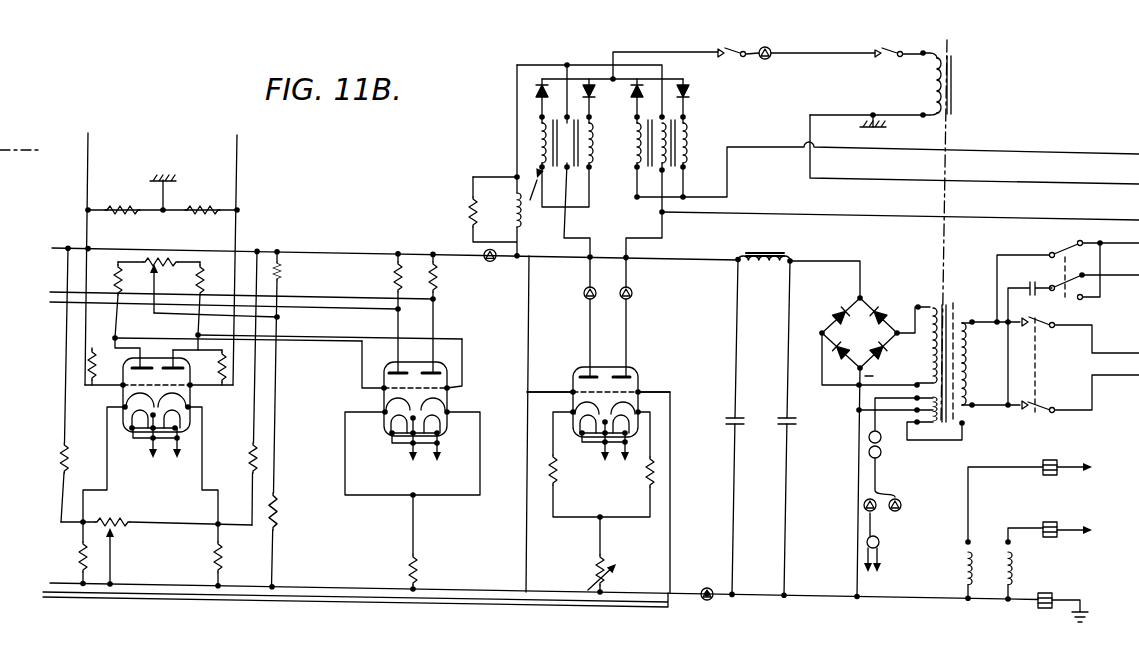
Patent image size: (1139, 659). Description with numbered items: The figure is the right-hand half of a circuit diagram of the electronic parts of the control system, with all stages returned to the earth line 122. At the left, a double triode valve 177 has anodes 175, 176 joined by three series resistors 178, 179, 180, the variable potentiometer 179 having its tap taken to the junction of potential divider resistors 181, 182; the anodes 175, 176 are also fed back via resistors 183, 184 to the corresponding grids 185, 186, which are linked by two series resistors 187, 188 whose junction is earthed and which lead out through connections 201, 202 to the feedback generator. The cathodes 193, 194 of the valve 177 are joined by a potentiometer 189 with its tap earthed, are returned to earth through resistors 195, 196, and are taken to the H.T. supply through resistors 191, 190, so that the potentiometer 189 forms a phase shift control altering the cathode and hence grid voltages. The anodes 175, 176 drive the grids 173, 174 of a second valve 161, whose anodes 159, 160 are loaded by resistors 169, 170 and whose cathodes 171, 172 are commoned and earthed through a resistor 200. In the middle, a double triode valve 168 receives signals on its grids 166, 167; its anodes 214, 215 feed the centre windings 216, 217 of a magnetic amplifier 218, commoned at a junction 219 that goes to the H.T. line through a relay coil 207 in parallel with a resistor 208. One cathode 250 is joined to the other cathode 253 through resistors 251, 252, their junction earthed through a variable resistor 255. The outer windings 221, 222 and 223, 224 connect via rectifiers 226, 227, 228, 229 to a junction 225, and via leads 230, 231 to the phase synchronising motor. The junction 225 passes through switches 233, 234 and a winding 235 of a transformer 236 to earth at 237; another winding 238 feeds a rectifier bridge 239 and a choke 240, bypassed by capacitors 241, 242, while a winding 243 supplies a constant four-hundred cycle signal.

The earth line 122 is at (164, 180).
The anode 159 is at (434, 364).
The anode 160 is at (397, 364).
The valve 161 is at (452, 398).
The grid 166 is at (573, 392).
The grid 167 is at (640, 392).
The double triode valve 168 is at (638, 373).
The resistor 169 is at (436, 284).
The resistor 170 is at (395, 280).
The cathode 171 is at (449, 418).
The cathode 172 is at (387, 424).
The grid 173 is at (449, 388).
The grid 174 is at (381, 390).
The anode 175 is at (176, 362).
The anode 176 is at (141, 360).
The double triode valve 177 is at (191, 391).
The resistor 178 is at (201, 276).
The variable potentiometer 179 is at (165, 262).
The resistor 180 is at (118, 270).
The potential divider resistor 181 is at (278, 272).
The potential divider resistor 182 is at (277, 512).
The resistor 183 is at (193, 385).
The resistor 184 is at (93, 366).
The grid 185 is at (225, 372).
The grid 186 is at (122, 388).
The resistor 187 is at (209, 197).
The resistor 188 is at (125, 197).
The potentiometer 189 is at (118, 522).
The resistor 190 is at (66, 460).
The resistor 191 is at (257, 457).
The cathode 193 is at (188, 453).
The cathode 194 is at (137, 438).
The resistor 195 is at (221, 552).
The resistor 196 is at (82, 560).
The resistor 200 is at (416, 570).
The connection 201 is at (238, 165).
The connection 202 is at (89, 160).
The winding 207 is at (513, 200).
The resistor 208 is at (472, 203).
The anode 214 is at (589, 375).
The anode 215 is at (627, 373).
The centre winding 216 is at (566, 208).
The centre winding 217 is at (660, 170).
The magnetic amplifier 218 is at (538, 198).
The junction 219 is at (567, 64).
The outer winding 221 is at (539, 130).
The outer winding 222 is at (636, 140).
The outer winding 223 is at (660, 160).
The outer winding 224 is at (688, 150).
The junction 225 is at (613, 77).
The rectifier 226 is at (537, 90).
The rectifier 227 is at (592, 91).
The rectifier 228 is at (643, 88).
The rectifier 229 is at (690, 92).
The lead 230 is at (737, 212).
The lead 231 is at (740, 147).
The switch 233 is at (745, 51).
The switch 234 is at (900, 56).
The winding 235 is at (938, 112).
The transformer 236 is at (975, 287).
The earth 237 is at (882, 102).
The winding 238 is at (930, 282).
The rectifier bridge 239 is at (831, 320).
The choke 240 is at (768, 254).
The capacitor 241 is at (787, 428).
The capacitor 242 is at (736, 428).
The winding 243 is at (964, 392).
The cathode 250 is at (572, 413).
The resistor 251 is at (556, 470).
The resistor 252 is at (652, 475).
The cathode 253 is at (639, 412).
The variable resistor 255 is at (598, 580).